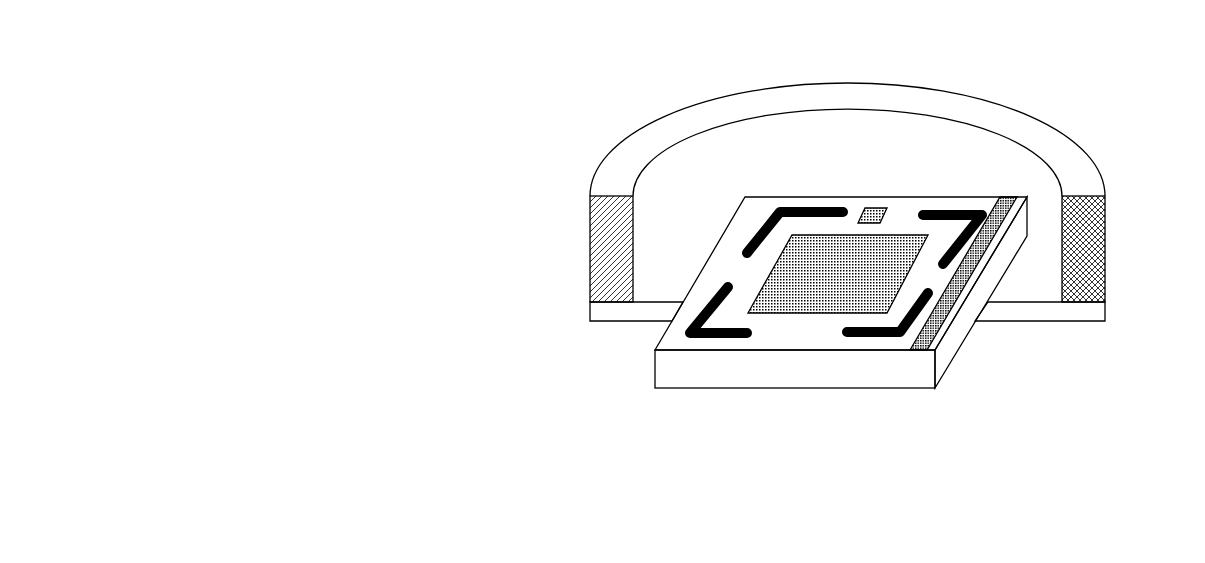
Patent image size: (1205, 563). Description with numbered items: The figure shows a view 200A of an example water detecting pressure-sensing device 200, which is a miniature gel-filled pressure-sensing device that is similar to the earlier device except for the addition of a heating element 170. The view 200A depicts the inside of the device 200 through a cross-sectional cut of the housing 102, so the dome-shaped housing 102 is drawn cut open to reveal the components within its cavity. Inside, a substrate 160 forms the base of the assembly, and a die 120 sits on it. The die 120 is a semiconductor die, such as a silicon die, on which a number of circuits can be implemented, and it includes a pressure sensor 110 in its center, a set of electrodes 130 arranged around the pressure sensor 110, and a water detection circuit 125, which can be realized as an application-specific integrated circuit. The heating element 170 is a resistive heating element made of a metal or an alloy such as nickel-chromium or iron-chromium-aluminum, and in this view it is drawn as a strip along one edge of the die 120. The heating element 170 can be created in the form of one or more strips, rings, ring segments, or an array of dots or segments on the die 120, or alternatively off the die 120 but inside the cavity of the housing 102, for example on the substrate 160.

The view 200A is at (488, 82).
The water detecting pressure-sensing device 200 is at (1092, 107).
The housing 102 is at (912, 88).
The substrate 160 is at (603, 325).
The die 120 is at (813, 380).
The pressure sensor 110 is at (857, 285).
The water detection circuit 125 is at (878, 207).
The set of electrodes 130 is at (723, 342).
The heating element 170 is at (950, 308).